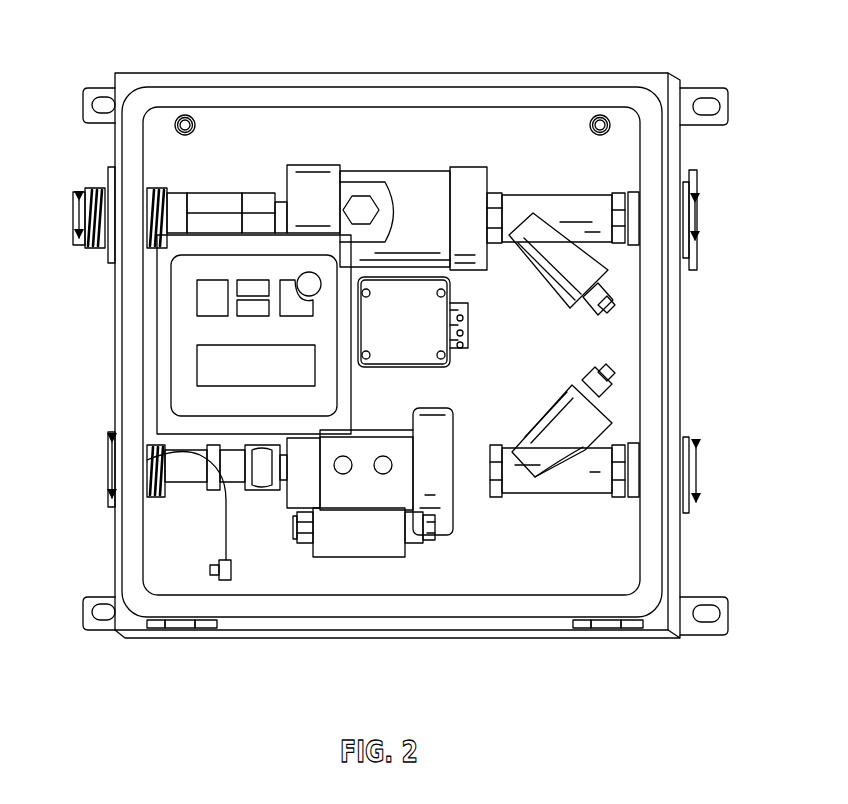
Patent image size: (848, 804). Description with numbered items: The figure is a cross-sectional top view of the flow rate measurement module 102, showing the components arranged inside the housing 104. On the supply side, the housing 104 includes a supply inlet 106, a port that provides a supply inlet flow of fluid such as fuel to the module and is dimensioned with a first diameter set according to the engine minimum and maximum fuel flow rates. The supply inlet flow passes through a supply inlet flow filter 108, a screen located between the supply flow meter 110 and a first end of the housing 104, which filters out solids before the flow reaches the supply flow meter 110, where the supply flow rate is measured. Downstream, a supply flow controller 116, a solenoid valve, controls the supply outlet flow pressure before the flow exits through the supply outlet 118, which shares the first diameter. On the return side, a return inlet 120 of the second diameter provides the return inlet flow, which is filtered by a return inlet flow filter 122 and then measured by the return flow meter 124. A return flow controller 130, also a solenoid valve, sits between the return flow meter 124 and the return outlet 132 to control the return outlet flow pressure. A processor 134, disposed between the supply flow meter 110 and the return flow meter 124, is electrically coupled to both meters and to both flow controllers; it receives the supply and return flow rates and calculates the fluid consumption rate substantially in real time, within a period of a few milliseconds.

The flow rate measurement module 102 is at (100, 28).
The housing 104 is at (160, 95).
The supply inlet 106 is at (700, 222).
The supply inlet flow filter 108 is at (550, 205).
The supply flow meter 110 is at (405, 190).
The supply flow controller 116 is at (222, 195).
The supply outlet 118 is at (82, 226).
The return inlet 120 is at (698, 478).
The return inlet flow filter 122 is at (568, 470).
The return flow meter 124 is at (378, 512).
The return flow controller 130 is at (238, 475).
The return outlet 132 is at (110, 470).
The processor 134 is at (197, 352).